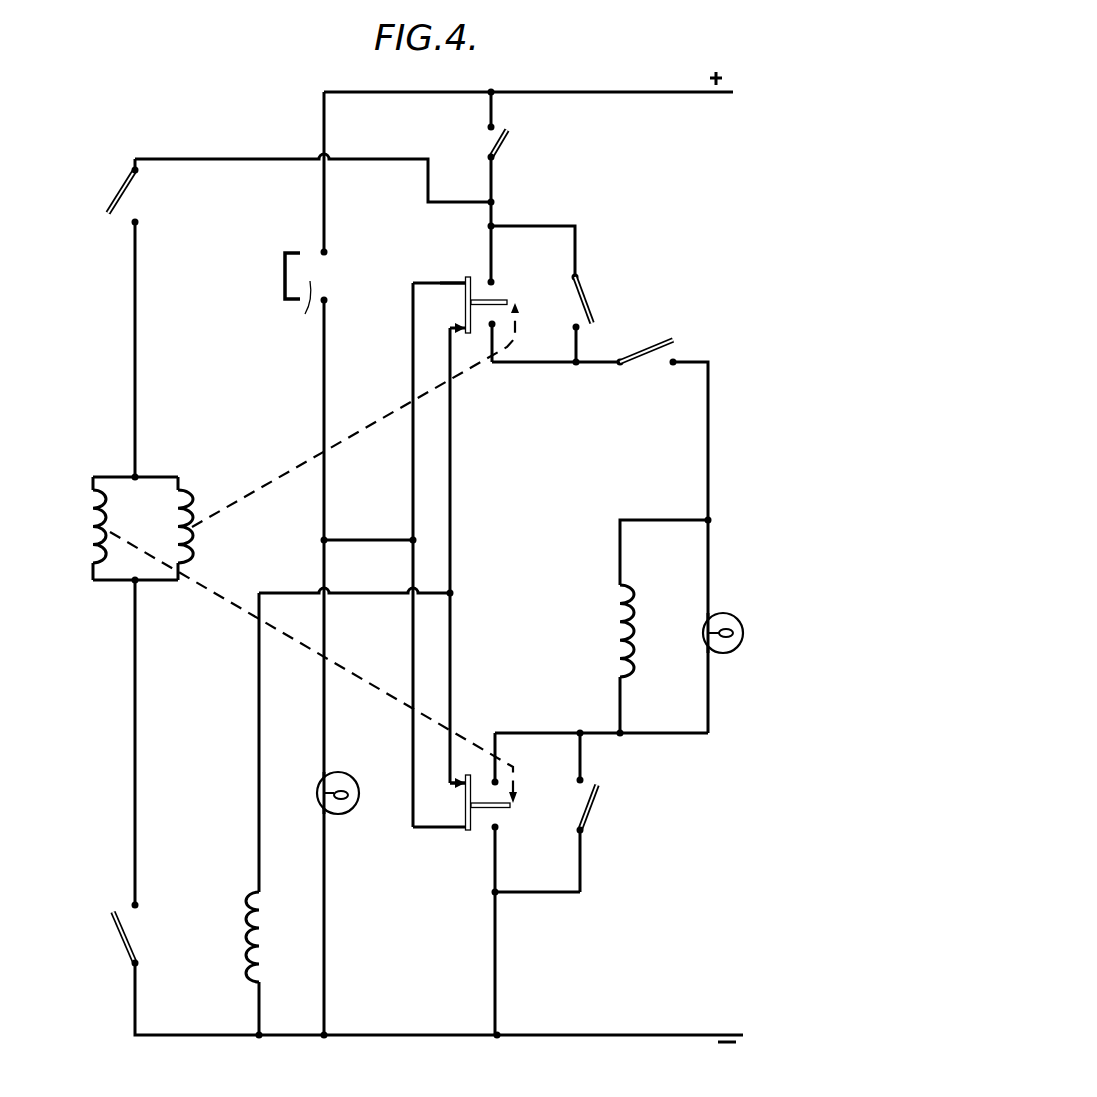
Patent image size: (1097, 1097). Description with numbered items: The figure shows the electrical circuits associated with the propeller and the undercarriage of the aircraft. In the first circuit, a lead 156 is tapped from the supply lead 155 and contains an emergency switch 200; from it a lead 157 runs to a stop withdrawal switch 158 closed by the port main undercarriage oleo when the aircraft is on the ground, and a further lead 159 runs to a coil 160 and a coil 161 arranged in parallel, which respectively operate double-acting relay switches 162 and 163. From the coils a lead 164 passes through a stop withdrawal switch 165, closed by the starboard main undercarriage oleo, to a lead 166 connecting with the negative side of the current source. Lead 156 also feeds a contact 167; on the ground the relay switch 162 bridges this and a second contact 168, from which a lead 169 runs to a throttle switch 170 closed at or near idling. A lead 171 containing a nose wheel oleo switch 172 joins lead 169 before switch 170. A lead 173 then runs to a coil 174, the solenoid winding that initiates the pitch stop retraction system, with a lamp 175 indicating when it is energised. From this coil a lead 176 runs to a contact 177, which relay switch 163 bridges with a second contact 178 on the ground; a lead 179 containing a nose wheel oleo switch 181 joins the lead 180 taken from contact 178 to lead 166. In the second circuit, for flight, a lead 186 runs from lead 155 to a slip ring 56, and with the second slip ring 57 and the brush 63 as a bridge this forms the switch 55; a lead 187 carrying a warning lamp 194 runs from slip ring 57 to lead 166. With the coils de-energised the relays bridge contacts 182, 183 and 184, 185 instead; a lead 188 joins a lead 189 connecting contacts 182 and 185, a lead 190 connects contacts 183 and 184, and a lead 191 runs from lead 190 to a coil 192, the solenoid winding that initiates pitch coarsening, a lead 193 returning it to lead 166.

The lead 155 is at (630, 90).
The switch 200 is at (510, 138).
The lead 156 is at (492, 180).
The lead 157 is at (388, 147).
The stop withdrawal switch 158 is at (120, 191).
The lead 186 is at (325, 195).
The slip ring 56 is at (327, 252).
The slip ring 57 is at (327, 300).
The brush 63 is at (283, 278).
The switch 55 is at (289, 316).
The lead 159 is at (135, 357).
The lead 187 is at (325, 383).
The contact 182 is at (464, 279).
The contact 183 is at (465, 329).
The contact 167 is at (493, 280).
The double-acting relay switch 162 is at (476, 298).
The lead 171 is at (560, 226).
The switch 172 is at (588, 293).
The contact 168 is at (490, 328).
The lead 169 is at (543, 365).
The switch 170 is at (640, 366).
The lead 173 is at (708, 472).
The lead 190 is at (452, 478).
The lead 189 is at (413, 478).
The lead 188 is at (359, 526).
The lead 191 is at (368, 600).
The coil 161 is at (143, 529).
The coil 160 is at (190, 538).
The coil 174 is at (636, 640).
The lamp 175 is at (702, 638).
The lead 164 is at (135, 745).
The warning lamp 194 is at (350, 780).
The contact 184 is at (463, 775).
The lead 176 is at (542, 737).
The contact 177 is at (498, 780).
The double-acting relay switch 163 is at (478, 817).
The contact 178 is at (497, 832).
The contact 185 is at (462, 832).
The switch 181 is at (592, 808).
The lead 179 is at (580, 875).
The stop withdrawal switch 165 is at (127, 925).
The coil 192 is at (280, 926).
The lead 193 is at (261, 1000).
The lead 166 is at (187, 1033).
The lead 180 is at (497, 948).